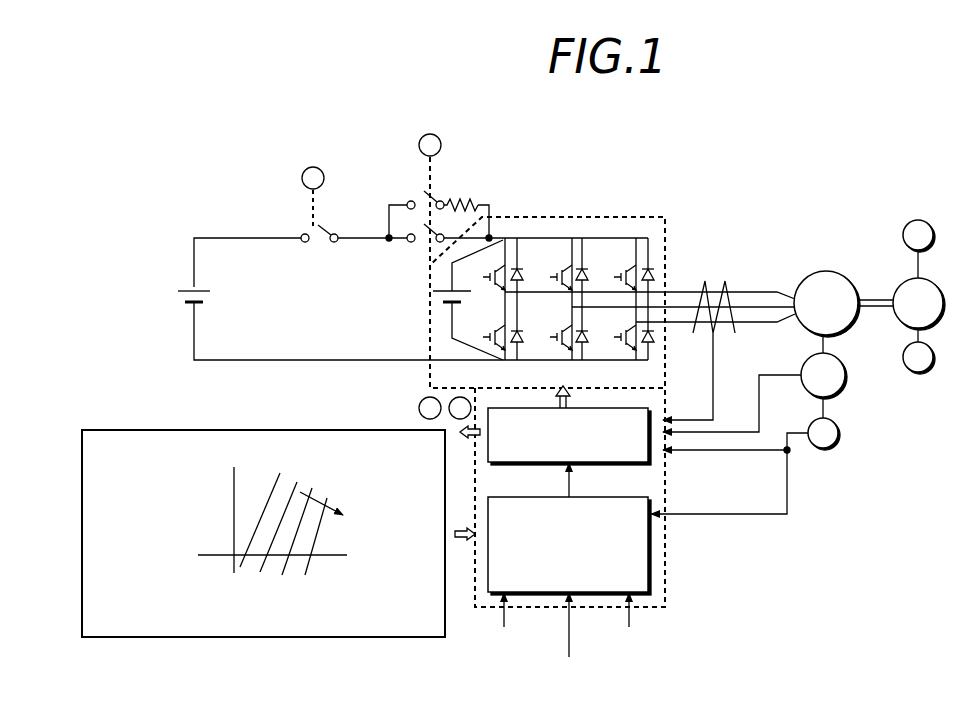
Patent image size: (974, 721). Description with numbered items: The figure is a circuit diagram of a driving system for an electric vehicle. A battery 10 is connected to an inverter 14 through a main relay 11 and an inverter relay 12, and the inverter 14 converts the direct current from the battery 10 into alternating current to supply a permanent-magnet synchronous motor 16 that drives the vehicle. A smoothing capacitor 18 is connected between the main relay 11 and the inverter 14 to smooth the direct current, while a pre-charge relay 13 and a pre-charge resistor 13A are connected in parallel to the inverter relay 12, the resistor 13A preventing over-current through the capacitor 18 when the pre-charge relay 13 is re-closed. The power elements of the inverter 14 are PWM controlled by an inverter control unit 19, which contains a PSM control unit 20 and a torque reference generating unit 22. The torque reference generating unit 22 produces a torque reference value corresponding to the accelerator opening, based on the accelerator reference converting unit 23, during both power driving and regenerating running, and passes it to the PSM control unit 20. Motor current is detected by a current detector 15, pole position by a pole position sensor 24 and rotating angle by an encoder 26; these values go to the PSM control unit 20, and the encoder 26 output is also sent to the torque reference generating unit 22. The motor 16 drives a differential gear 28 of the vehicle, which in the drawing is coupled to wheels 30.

The battery 10 is at (204, 290).
The main relay 11 is at (328, 230).
The inverter relay 12 is at (421, 247).
The pre-charge relay 13 is at (435, 192).
The pre-charge resistor 13A is at (470, 197).
The inverter 14 is at (562, 224).
The current detector 15 is at (708, 280).
The synchronous motor 16 is at (827, 271).
The smoothing capacitor 18 is at (463, 318).
The inverter control unit 19 is at (665, 570).
The PSM control unit 20 is at (537, 469).
The torque reference generating unit 22 is at (648, 535).
The accelerator reference converting unit 23 is at (443, 620).
The pole position sensor 24 is at (802, 368).
The encoder 26 is at (838, 445).
The differential gear 28 is at (898, 278).
The drive wheels 30 is at (907, 222).